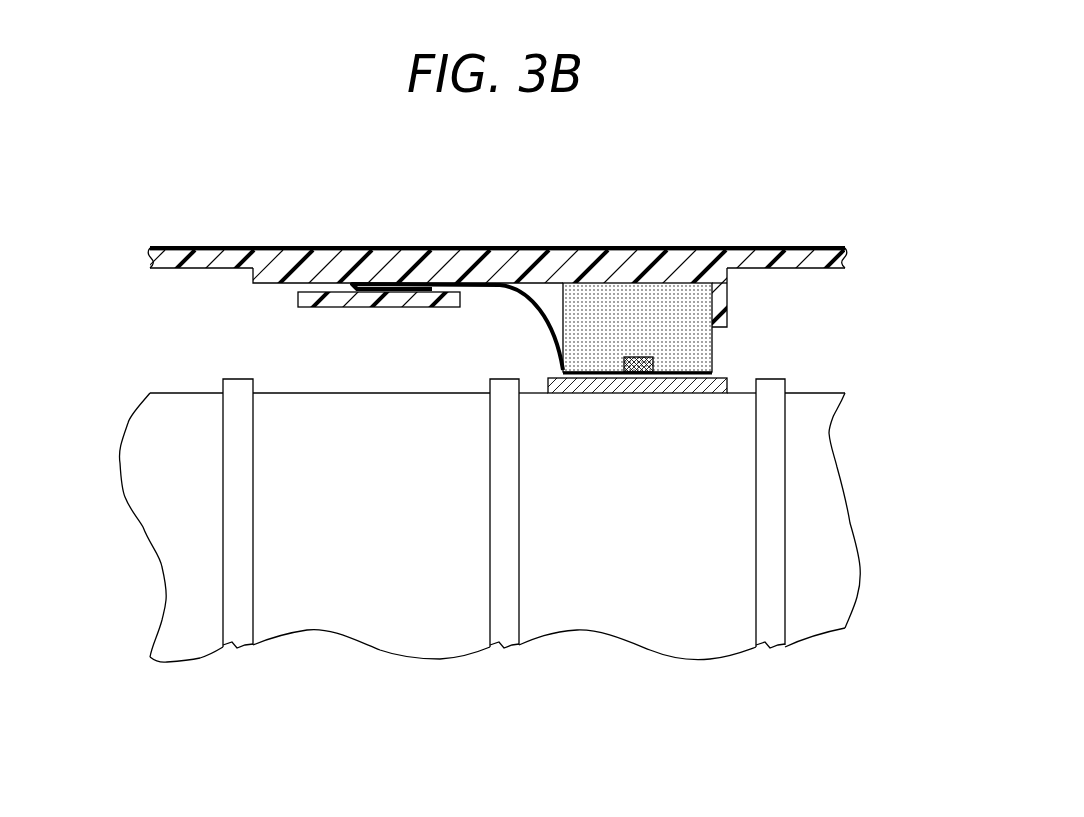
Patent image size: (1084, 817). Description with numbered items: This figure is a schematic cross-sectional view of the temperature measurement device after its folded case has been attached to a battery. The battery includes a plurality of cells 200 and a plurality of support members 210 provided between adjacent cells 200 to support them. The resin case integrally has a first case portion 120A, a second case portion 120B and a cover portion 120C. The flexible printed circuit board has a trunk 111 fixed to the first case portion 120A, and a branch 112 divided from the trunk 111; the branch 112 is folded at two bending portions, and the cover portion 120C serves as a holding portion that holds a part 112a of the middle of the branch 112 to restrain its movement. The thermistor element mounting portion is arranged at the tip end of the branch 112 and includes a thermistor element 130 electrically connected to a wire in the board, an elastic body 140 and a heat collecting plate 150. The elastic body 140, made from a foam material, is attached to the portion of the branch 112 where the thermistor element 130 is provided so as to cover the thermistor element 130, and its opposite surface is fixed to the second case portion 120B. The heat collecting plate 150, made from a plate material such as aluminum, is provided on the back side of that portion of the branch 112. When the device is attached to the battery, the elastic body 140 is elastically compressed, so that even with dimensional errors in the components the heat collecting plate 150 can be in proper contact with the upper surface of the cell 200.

The trunk 111 is at (472, 247).
The branch 112 is at (525, 305).
The part of the middle of the branch 112a is at (388, 275).
The first case portion 120A is at (212, 247).
The second case portion 120B is at (273, 273).
The cover portion 120C is at (362, 298).
The thermistor element 130 is at (645, 360).
The elastic body 140 is at (675, 302).
The heat collecting plate 150 is at (603, 388).
The cell 200 is at (180, 520).
The support member 210 is at (243, 583).